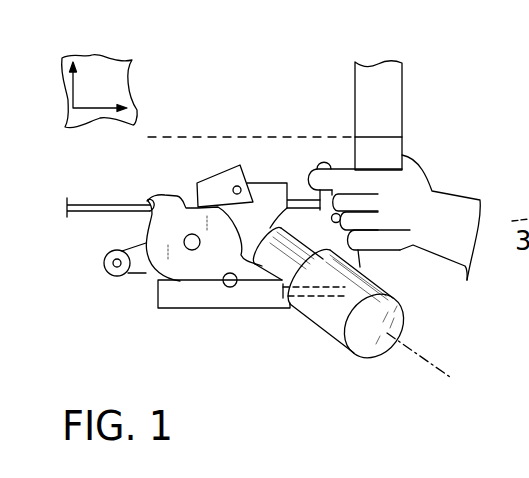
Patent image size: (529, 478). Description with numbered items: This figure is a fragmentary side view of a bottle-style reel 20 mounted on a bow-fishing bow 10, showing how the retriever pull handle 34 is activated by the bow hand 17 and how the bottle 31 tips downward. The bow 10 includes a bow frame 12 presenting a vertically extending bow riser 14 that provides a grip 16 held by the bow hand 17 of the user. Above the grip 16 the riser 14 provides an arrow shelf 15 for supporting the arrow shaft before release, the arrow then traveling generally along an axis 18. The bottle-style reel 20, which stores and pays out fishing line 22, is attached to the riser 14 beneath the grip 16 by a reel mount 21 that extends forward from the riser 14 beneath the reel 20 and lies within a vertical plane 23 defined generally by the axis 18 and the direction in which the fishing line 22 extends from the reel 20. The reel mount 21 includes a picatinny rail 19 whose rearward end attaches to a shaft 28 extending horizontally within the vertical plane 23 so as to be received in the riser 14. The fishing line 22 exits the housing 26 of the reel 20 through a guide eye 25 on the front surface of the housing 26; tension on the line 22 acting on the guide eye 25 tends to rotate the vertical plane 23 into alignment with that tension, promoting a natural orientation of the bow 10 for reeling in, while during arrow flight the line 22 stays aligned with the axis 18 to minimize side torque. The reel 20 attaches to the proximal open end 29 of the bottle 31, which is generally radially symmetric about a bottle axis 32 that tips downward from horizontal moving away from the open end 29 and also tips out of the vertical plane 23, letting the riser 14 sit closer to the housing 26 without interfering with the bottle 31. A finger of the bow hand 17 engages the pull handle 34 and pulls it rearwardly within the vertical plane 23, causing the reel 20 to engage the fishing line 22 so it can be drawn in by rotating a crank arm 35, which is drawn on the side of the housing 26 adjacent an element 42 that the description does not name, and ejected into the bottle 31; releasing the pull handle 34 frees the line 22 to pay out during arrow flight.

The bow-fishing bow 10 is at (420, 107).
The bow frame 12 is at (385, 83).
The bow riser 14 is at (390, 254).
The arrow shelf 15 is at (390, 137).
The grip 16 is at (398, 264).
The bow hand 17 is at (422, 200).
The axis 18 is at (170, 137).
The picatinny rail 19 is at (233, 298).
The bottle-style reel 20 is at (118, 300).
The reel mount 21 is at (160, 322).
The fishing line 22 is at (100, 205).
The vertical plane 23 is at (107, 82).
The guide eye 25 is at (149, 190).
The housing 26 is at (165, 228).
The shaft 28 is at (327, 296).
The open end 29 is at (326, 221).
The bottle 31 is at (382, 356).
The bottle axis 32 is at (430, 366).
The pull handle 34 is at (320, 162).
The crank arm 35 is at (138, 272).
The roller 42 is at (103, 264).